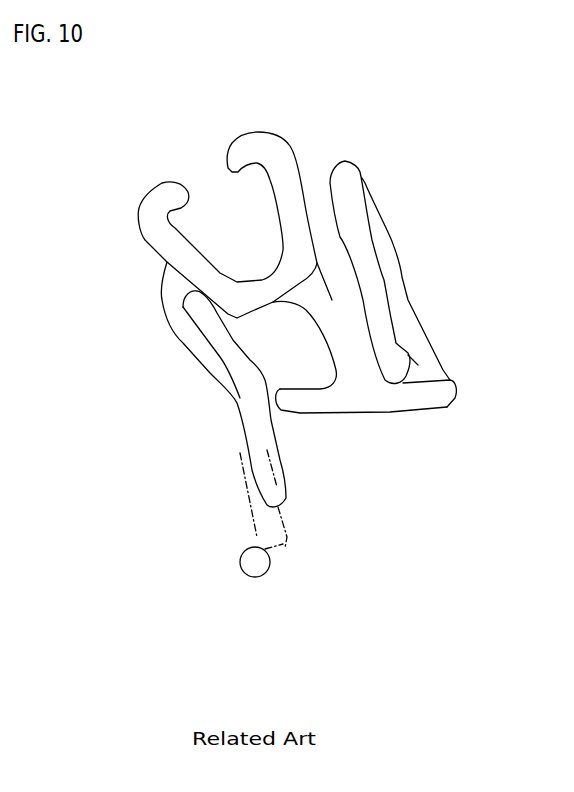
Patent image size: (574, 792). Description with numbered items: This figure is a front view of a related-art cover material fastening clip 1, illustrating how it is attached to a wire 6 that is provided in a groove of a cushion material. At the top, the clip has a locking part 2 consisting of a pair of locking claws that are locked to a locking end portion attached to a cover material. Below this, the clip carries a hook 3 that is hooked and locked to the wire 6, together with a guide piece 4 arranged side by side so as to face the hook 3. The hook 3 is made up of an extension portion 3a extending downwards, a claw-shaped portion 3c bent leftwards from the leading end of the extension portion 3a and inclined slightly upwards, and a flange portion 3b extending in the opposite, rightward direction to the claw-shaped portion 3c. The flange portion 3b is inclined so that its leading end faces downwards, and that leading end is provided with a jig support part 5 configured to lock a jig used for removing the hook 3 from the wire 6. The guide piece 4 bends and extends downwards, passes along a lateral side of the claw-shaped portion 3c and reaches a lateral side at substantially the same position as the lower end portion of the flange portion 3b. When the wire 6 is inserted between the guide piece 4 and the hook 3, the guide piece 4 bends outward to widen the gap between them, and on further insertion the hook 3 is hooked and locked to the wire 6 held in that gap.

The cover material fastening clip 1 is at (439, 129).
The locking part 2 is at (266, 143).
The hook 3 is at (380, 363).
The extension portion 3a is at (335, 312).
The flange portion 3b is at (444, 397).
The claw-shaped portion 3c is at (307, 403).
The guide piece 4 is at (198, 346).
The jig support part 5 is at (354, 228).
The wire 6 is at (262, 564).